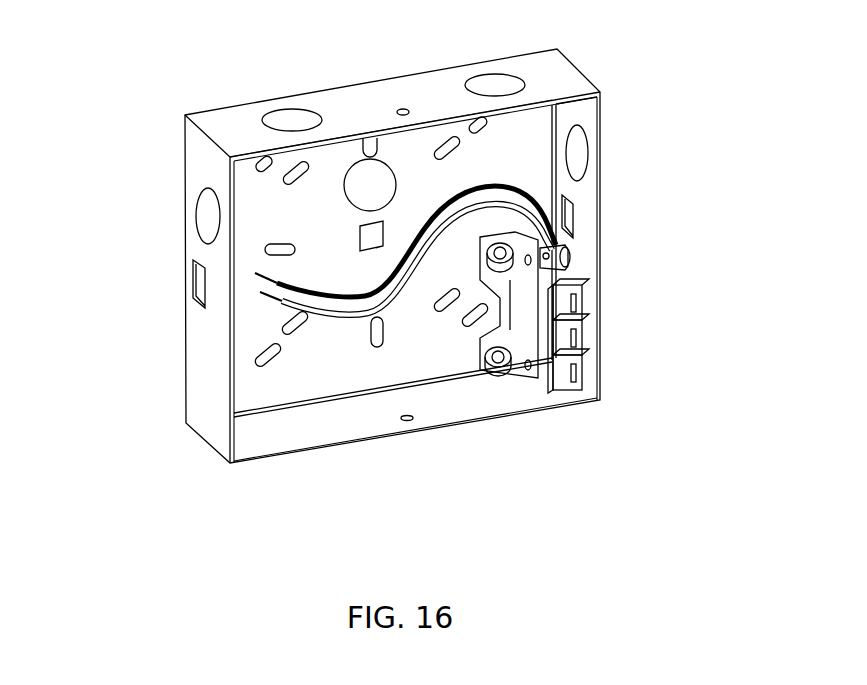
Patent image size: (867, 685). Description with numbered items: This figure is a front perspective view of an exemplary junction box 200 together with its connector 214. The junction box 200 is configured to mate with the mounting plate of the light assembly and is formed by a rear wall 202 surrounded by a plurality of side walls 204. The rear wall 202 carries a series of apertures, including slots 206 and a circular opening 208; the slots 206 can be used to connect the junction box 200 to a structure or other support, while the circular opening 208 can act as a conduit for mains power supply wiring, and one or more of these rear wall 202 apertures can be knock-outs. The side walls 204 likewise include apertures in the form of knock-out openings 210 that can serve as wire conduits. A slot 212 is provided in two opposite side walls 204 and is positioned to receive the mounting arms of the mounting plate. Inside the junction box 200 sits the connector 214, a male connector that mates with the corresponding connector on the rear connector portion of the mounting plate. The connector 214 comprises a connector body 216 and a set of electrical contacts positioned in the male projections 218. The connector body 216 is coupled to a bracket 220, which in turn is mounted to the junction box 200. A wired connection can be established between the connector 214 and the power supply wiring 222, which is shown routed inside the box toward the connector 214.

The junction box 200 is at (578, 62).
The rear wall 202 is at (283, 383).
The side walls 204 is at (197, 393).
The slots 206 is at (378, 350).
The circular opening 208 is at (352, 164).
The knock-out openings 210 is at (287, 110).
The slot 212 is at (192, 270).
The connector 214 is at (636, 373).
The connector body 216 is at (540, 256).
The male projections 218 is at (574, 343).
The bracket 220 is at (521, 360).
The power supply wiring 222 is at (524, 197).